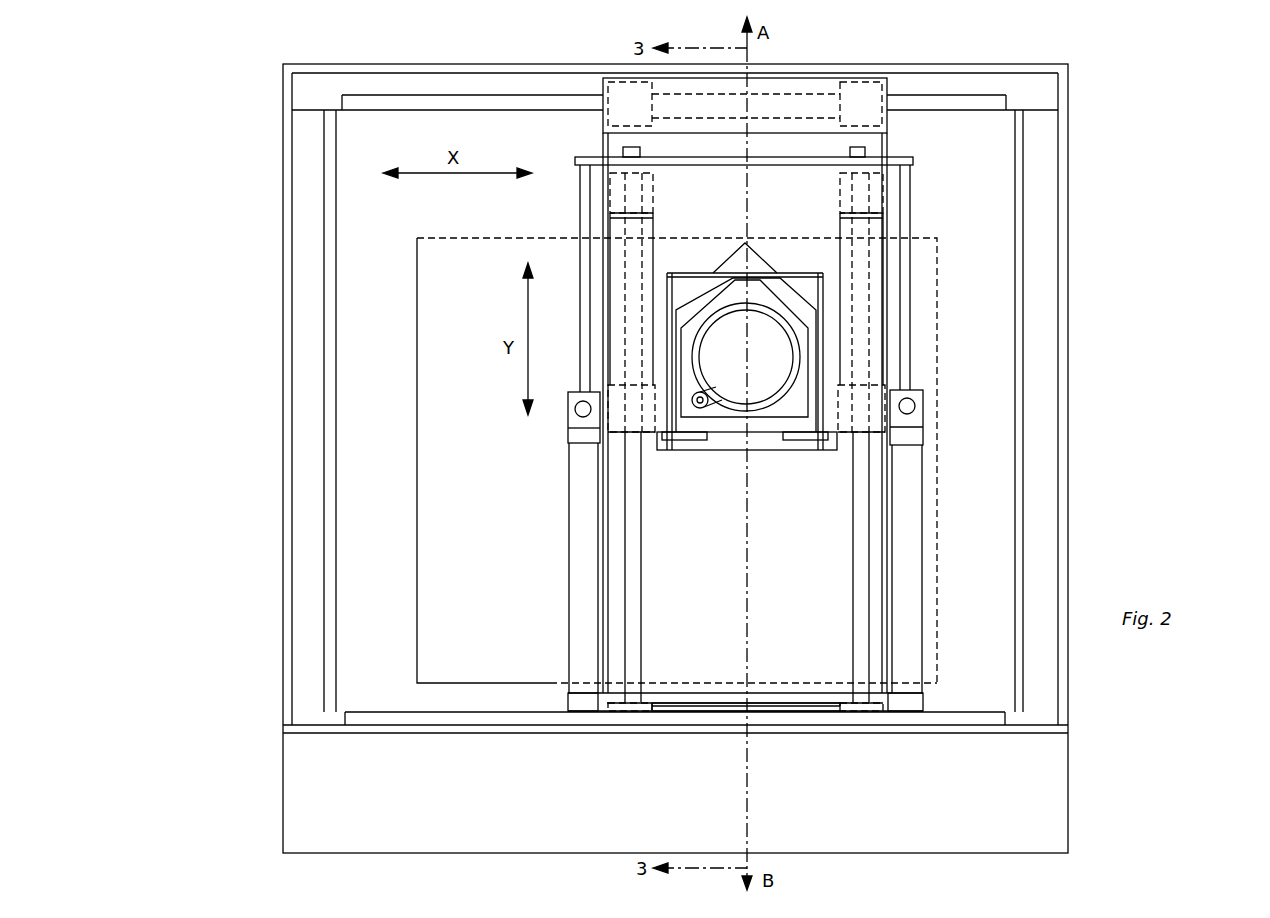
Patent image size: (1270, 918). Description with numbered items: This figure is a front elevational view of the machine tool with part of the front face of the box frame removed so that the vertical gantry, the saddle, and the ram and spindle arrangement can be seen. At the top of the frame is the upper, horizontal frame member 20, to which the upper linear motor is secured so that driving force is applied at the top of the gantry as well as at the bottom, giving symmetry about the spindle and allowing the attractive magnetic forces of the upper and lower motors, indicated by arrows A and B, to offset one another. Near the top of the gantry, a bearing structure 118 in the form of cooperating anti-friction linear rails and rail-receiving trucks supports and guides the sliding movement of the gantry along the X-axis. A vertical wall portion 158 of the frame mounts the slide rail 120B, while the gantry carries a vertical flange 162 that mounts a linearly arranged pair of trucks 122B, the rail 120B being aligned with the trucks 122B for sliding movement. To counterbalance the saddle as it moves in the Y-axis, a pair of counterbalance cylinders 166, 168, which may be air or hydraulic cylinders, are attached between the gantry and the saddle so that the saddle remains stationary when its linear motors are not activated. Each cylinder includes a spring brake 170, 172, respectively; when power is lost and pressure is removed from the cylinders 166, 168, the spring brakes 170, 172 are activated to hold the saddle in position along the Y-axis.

The upper horizontal frame member 20 is at (300, 70).
The vertical wall portion 158 is at (313, 87).
The vertical flange 162 is at (770, 85).
The rail 120B is at (813, 102).
The trucks 122B is at (618, 85).
The bearing structure 118 is at (892, 58).
The spring brake 170 is at (575, 410).
The spring brake 172 is at (915, 405).
The counterbalance cylinder 166 is at (578, 560).
The counterbalance cylinder 168 is at (912, 545).